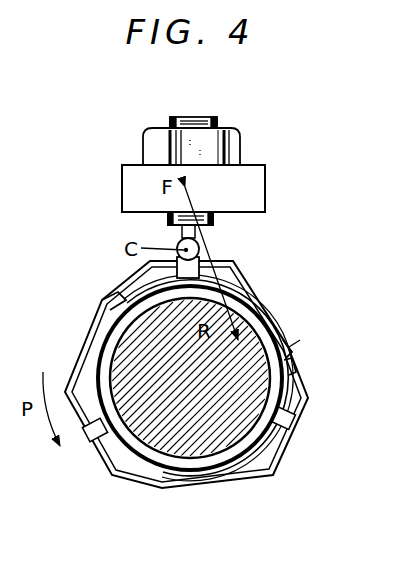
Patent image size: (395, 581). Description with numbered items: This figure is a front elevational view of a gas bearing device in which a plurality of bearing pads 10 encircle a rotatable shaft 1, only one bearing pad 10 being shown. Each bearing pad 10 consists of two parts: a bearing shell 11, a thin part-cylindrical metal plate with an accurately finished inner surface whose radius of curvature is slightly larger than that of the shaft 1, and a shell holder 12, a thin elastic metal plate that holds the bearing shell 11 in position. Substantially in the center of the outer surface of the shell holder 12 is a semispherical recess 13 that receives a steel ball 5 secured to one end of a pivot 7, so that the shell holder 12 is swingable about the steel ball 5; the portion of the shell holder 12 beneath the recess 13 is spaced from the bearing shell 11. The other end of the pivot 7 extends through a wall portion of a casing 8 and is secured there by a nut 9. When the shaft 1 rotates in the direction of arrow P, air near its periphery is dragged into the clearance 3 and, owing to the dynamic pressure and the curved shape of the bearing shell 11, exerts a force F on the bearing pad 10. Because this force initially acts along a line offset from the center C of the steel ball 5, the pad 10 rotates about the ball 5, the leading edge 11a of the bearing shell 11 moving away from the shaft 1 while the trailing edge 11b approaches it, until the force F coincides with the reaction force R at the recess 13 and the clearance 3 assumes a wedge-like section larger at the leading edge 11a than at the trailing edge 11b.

The rotatable shaft 1 is at (235, 428).
The clearance 3 is at (296, 404).
The steel ball 5 is at (178, 246).
The pivot 7 is at (193, 123).
The casing 8 is at (258, 189).
The nut 9 is at (238, 144).
The bearing pad 10 is at (250, 268).
The bearing shell 11 is at (260, 308).
The leading edge 11a is at (298, 345).
The trailing edge 11b is at (117, 293).
The shell holder 12 is at (291, 339).
The semispherical recess 13 is at (204, 268).